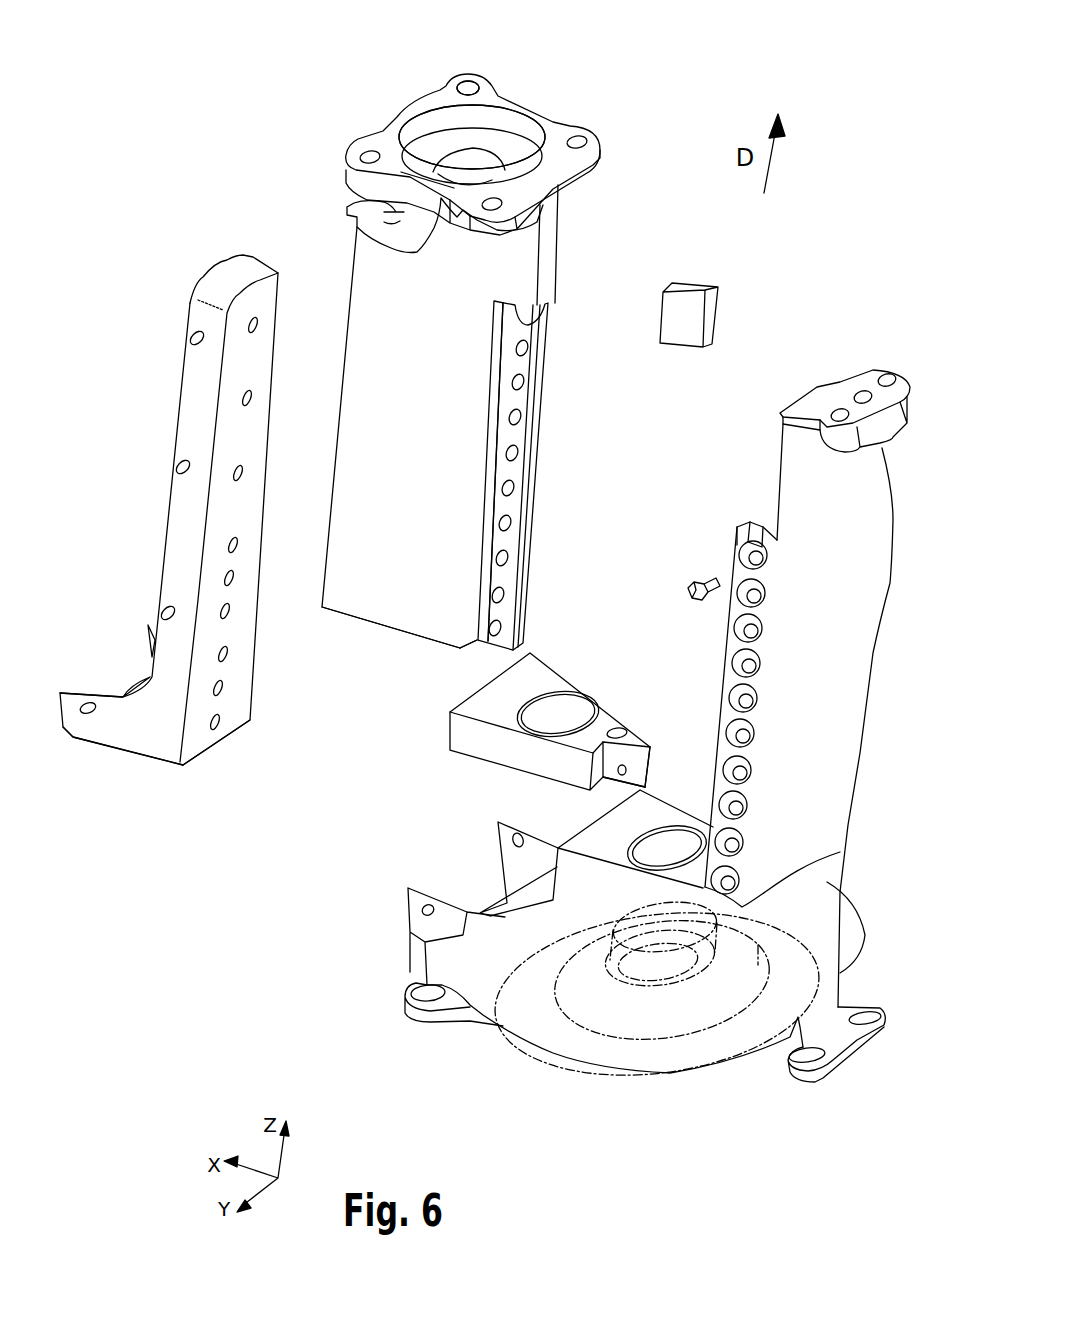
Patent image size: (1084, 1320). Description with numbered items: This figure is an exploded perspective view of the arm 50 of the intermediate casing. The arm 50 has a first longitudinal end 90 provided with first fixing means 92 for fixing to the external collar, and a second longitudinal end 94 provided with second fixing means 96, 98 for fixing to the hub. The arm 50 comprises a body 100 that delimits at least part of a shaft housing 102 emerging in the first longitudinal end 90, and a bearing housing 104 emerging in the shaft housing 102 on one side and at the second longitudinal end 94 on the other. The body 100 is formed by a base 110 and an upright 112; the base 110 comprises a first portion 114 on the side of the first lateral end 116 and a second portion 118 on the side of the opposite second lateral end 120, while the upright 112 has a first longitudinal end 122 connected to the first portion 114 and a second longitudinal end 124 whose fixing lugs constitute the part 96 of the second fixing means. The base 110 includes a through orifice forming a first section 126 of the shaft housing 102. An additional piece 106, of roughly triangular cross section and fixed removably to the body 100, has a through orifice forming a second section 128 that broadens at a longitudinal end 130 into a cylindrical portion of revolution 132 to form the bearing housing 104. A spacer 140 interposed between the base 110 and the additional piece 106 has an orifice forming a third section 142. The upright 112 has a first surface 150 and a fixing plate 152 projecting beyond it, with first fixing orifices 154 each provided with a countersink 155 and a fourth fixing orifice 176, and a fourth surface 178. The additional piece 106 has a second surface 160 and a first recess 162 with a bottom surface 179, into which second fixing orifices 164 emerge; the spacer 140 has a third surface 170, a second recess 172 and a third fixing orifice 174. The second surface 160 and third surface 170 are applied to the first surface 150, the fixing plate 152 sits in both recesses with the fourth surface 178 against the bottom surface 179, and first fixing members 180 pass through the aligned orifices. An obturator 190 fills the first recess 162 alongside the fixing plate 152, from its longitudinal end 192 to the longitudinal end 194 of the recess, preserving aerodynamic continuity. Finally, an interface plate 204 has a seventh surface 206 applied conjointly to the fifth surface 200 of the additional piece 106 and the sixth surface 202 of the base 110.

The arm 50 is at (252, 1031).
The first longitudinal end 90 is at (737, 1060).
The first fixing means 92 is at (413, 1012).
The second longitudinal end 94 is at (830, 390).
The second fixing means 96 is at (887, 373).
The second fixing means 98 is at (468, 73).
The body 100 is at (660, 1183).
The shaft housing 102 is at (469, 166).
The bearing housing 104 is at (480, 120).
The additional piece 106 is at (362, 618).
The base 110 is at (517, 1143).
The upright 112 is at (842, 952).
The first portion 114 is at (758, 947).
The first lateral end 116 is at (857, 747).
The second portion 118 is at (583, 917).
The second lateral end 120 is at (166, 517).
The first longitudinal end 122 is at (621, 993).
The second longitudinal end 124 is at (853, 462).
The first section 126 is at (670, 838).
The second section 128 is at (473, 177).
The longitudinal end 130 is at (400, 110).
The cylindrical portion of revolution 132 is at (357, 243).
The spacer 140 is at (523, 731).
The third section 142 is at (558, 714).
The first surface 150 is at (783, 460).
The fixing plate 152 is at (699, 706).
The first fixing orifices 154 is at (740, 562).
The countersink 155 is at (755, 604).
The second surface 160 is at (551, 254).
The first recess 162 is at (477, 647).
The second fixing orifices 164 is at (527, 353).
The third surface 170 is at (645, 765).
The second recess 172 is at (603, 787).
The third fixing orifice 174 is at (620, 774).
The fourth fixing orifice 176 is at (840, 852).
The fourth surface 178 is at (735, 538).
The bottom surface 179 is at (490, 430).
The first fixing member 180 is at (690, 594).
The obturator 190 is at (712, 312).
The longitudinal end 192 is at (760, 525).
The longitudinal end 194 is at (548, 304).
The fifth surface 200 is at (342, 393).
The sixth surface 202 is at (545, 905).
The interface plate 204 is at (100, 750).
The seventh surface 206 is at (193, 743).